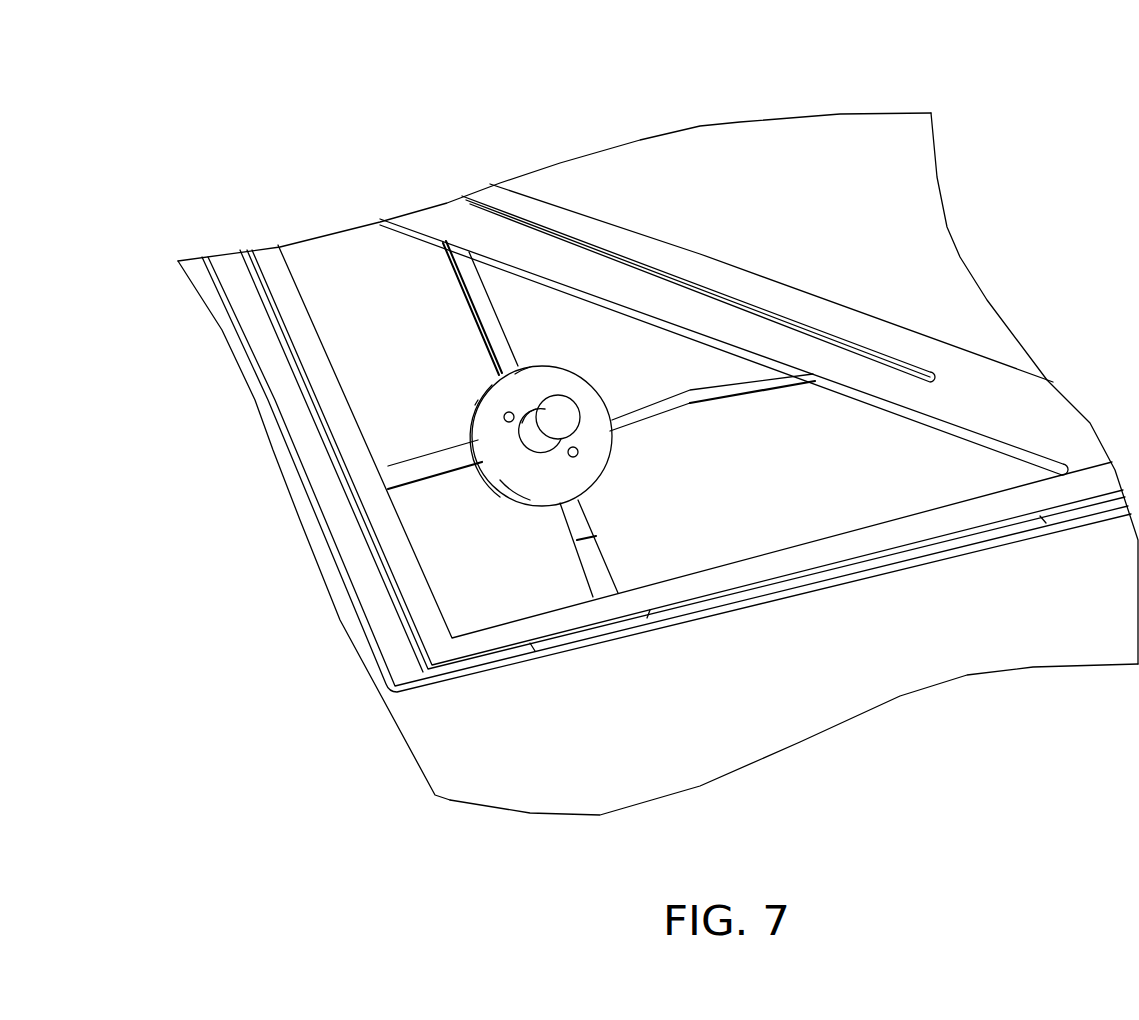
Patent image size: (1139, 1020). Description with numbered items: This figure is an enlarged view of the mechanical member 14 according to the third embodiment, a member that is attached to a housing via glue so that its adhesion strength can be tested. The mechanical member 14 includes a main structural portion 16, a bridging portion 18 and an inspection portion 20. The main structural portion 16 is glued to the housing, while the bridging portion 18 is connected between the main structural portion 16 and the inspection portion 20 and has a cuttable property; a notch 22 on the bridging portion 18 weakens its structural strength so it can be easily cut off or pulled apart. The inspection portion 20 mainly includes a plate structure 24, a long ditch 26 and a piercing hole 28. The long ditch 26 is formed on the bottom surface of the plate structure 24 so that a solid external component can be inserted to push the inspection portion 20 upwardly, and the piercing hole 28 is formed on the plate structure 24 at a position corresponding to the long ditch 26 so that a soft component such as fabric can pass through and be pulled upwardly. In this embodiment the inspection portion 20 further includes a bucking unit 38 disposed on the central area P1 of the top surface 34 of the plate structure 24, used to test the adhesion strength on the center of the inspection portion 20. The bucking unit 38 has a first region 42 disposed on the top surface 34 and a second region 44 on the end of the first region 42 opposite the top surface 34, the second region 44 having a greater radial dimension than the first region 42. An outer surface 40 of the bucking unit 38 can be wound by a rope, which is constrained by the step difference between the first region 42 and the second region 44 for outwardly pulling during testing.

The mechanical member 14 is at (975, 178).
The main structural portion 16 is at (553, 630).
The bridging portion 18 is at (598, 565).
The inspection portion 20 is at (493, 373).
The notch 22 is at (577, 543).
The plate structure 24 is at (540, 395).
The long ditch 26 is at (474, 402).
The piercing hole 28 is at (504, 417).
The top surface 34 is at (519, 461).
The bucking unit 38 is at (609, 237).
The outer surface 40 is at (528, 418).
The first region 42 is at (542, 440).
The second region 44 is at (560, 405).
The central area P1 is at (535, 465).